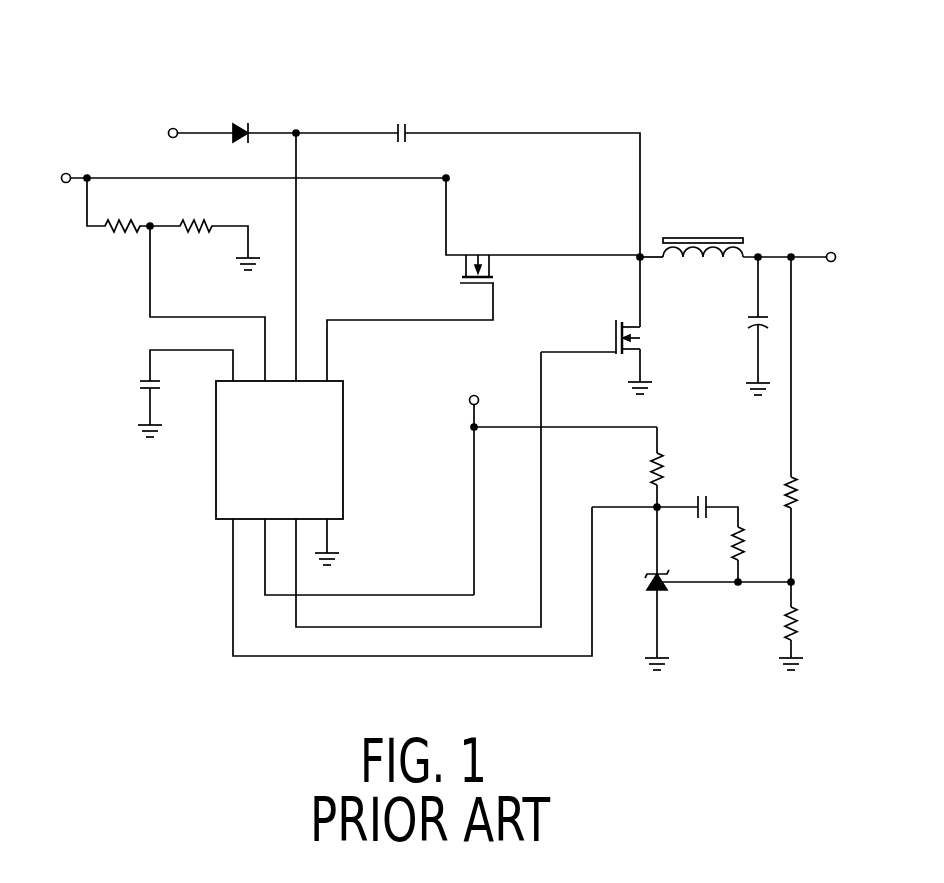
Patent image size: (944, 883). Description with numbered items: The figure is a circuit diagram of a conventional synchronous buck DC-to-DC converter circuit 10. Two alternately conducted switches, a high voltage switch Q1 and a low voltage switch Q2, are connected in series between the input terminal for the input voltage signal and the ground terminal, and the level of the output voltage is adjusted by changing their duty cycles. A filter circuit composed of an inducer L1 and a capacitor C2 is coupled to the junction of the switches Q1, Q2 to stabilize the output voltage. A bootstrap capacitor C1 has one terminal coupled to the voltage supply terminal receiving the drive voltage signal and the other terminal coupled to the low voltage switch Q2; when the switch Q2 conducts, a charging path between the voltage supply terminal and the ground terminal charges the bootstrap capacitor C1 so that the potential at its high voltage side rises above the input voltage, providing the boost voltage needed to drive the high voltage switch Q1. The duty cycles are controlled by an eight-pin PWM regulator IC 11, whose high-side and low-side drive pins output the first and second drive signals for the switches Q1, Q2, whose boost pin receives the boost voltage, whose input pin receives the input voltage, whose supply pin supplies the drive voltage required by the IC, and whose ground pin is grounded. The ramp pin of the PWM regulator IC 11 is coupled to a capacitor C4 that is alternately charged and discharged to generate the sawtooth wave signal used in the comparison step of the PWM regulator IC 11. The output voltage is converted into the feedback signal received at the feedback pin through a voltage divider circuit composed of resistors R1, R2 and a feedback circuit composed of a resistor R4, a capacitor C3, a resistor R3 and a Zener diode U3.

The synchronous buck DC-to-DC converter circuit 10 is at (72, 37).
The PWM regulator IC 11 is at (217, 462).
The bootstrap capacitor C1 is at (402, 117).
The capacitor C2 is at (742, 320).
The capacitor C3 is at (704, 493).
The capacitor C4 is at (169, 393).
The high voltage switch Q1 is at (477, 253).
The low voltage switch Q2 is at (647, 319).
The inducer L1 is at (703, 232).
The resistor R1 is at (808, 493).
The resistor R2 is at (808, 624).
The resistor R3 is at (638, 470).
The resistor R4 is at (754, 545).
The Zener diode U3 is at (641, 583).